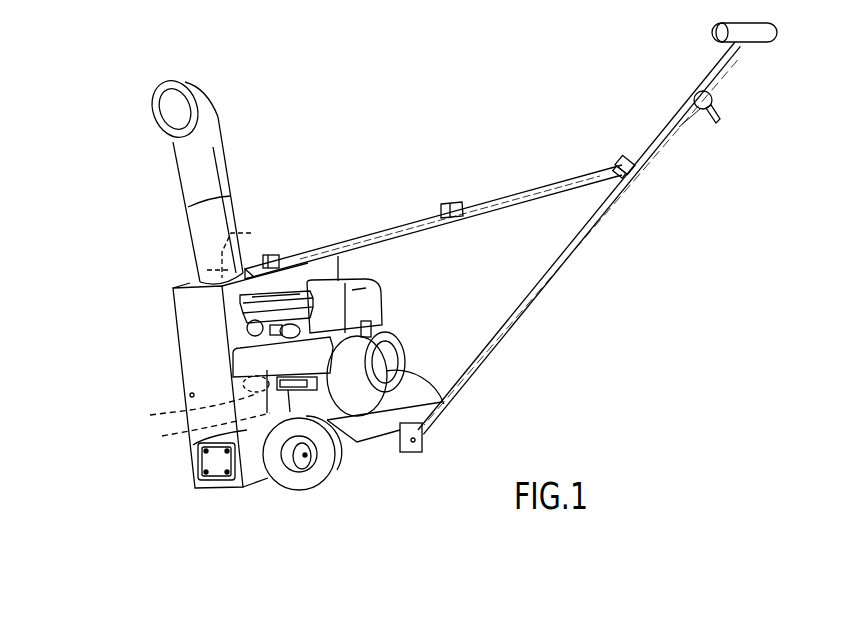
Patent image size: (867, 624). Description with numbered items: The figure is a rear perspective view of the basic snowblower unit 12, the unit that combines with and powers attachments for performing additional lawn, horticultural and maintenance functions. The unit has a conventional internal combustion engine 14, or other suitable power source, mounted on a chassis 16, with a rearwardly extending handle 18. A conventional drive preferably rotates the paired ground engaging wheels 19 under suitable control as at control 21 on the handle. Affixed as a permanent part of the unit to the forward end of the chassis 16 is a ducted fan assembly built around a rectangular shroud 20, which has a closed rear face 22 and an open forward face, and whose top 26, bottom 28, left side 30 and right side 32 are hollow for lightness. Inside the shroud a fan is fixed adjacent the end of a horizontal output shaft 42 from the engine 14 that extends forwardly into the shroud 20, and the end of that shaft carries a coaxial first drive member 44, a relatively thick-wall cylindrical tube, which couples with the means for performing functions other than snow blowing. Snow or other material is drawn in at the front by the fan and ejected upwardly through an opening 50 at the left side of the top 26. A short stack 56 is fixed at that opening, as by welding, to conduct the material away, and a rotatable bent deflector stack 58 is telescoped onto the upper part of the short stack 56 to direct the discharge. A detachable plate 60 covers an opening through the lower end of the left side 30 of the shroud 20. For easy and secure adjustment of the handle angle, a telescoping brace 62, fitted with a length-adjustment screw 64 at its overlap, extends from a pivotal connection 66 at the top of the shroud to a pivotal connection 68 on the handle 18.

The basic snowblower unit 12 is at (104, 152).
The internal combustion engine 14 is at (344, 333).
The chassis 16 is at (352, 472).
The handle 18 is at (597, 228).
The ground engaging wheels 19 is at (302, 495).
The shroud 20 is at (203, 390).
The control 21 is at (719, 118).
The closed rear face 22 is at (193, 445).
The top 26 is at (187, 280).
The bottom 28 is at (258, 482).
The left side 30 is at (177, 325).
The right side 32 is at (339, 265).
The output shaft 42 is at (199, 432).
The first drive member 44 is at (191, 403).
The opening 50 is at (243, 250).
The short stack 56 is at (243, 217).
The deflector stack 58 is at (216, 115).
The detachable plate 60 is at (200, 469).
The telescoping brace 62 is at (385, 217).
The length-adjustment screw 64 is at (434, 169).
The pivotal connection 66 is at (277, 255).
The pivotal connection 68 is at (626, 156).